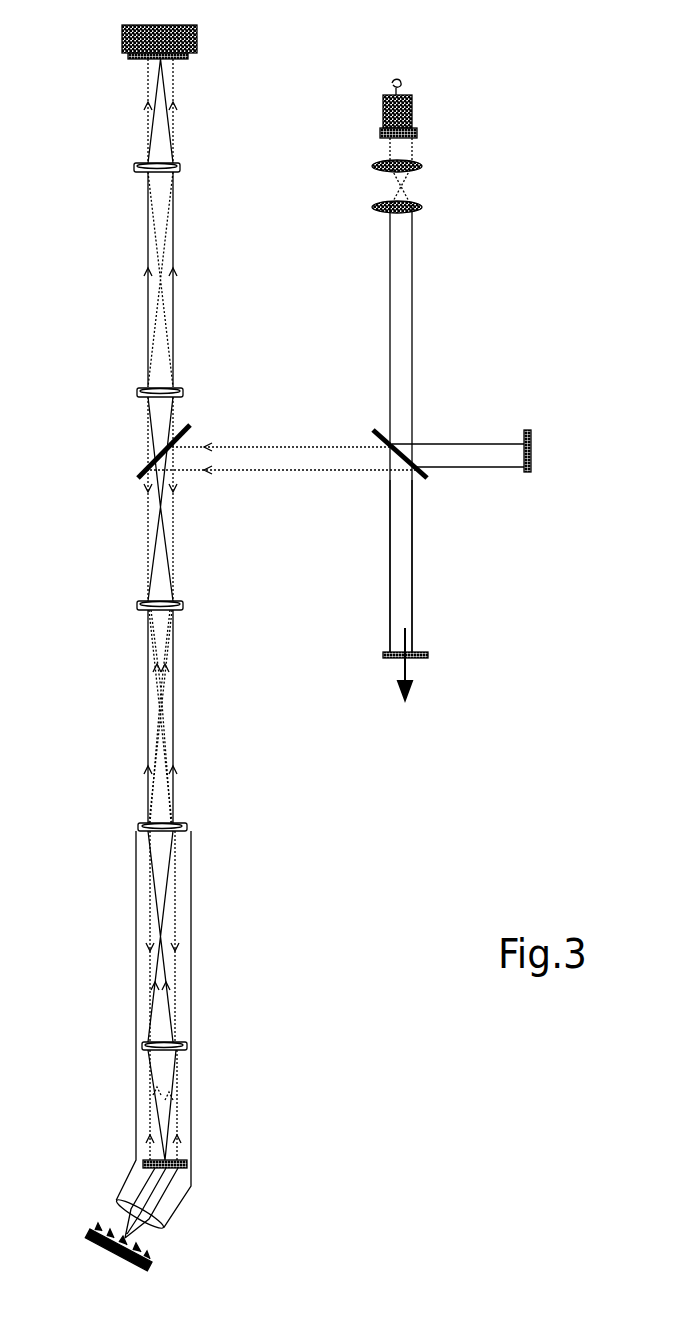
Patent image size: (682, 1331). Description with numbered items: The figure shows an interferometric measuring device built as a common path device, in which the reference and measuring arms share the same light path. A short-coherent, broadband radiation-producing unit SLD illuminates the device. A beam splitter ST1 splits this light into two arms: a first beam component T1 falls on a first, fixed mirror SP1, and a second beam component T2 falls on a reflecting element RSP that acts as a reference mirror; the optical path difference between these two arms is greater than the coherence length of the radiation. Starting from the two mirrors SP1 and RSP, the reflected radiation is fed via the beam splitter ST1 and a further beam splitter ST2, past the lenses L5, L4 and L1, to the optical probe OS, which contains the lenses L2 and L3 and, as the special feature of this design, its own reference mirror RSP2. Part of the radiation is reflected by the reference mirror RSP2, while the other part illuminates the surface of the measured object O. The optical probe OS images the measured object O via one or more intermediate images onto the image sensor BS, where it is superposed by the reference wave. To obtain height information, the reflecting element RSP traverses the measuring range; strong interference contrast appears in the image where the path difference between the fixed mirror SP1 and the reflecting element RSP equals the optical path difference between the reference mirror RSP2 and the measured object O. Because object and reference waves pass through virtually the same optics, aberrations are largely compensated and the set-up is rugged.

The image sensor BS is at (197, 32).
The radiation-producing unit SLD is at (425, 105).
The lens L5 is at (135, 165).
The lens L4 is at (138, 389).
The further beam splitter ST2 is at (190, 425).
The beam splitter ST1 is at (373, 430).
The fixed mirror SP1 is at (531, 450).
The first beam component T1 is at (483, 467).
The second beam component T2 is at (413, 558).
The reflecting element RSP is at (428, 655).
The lens L1 is at (183, 605).
The lens L2 is at (190, 827).
The optical probe OS is at (191, 918).
The lens L3 is at (187, 1046).
The reference mirror RSP2 is at (209, 1182).
The measured object O is at (112, 1256).